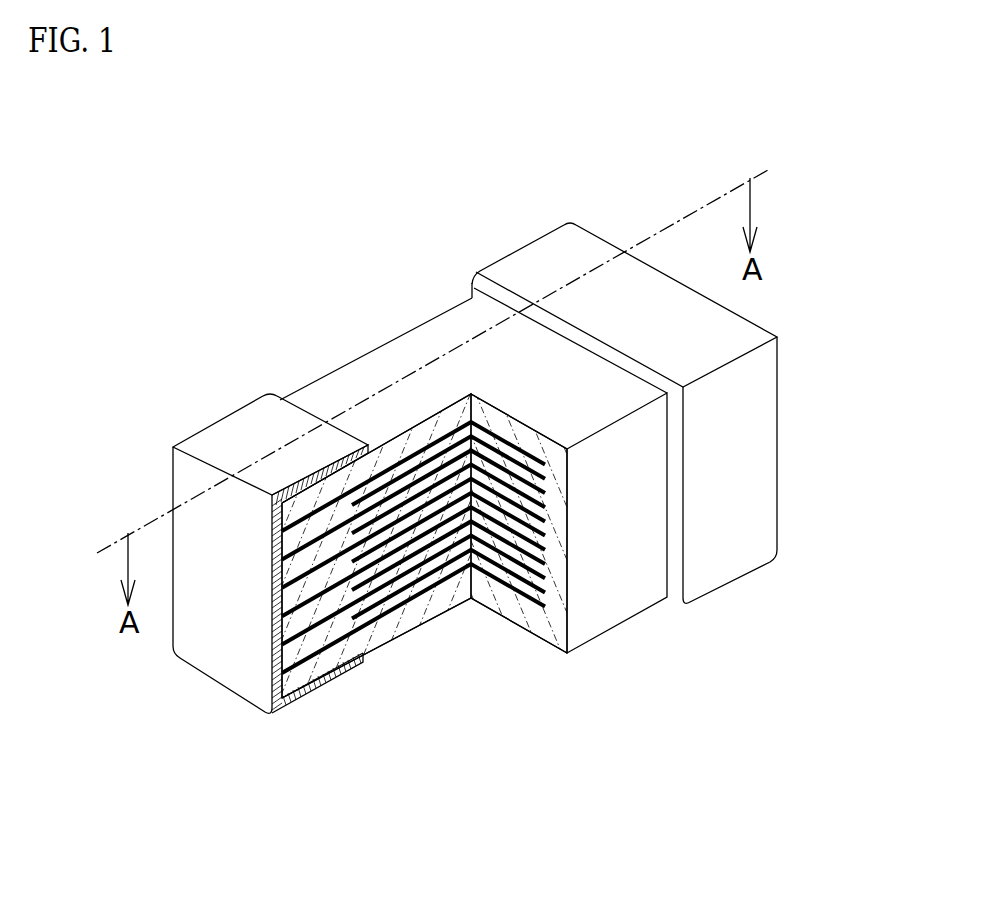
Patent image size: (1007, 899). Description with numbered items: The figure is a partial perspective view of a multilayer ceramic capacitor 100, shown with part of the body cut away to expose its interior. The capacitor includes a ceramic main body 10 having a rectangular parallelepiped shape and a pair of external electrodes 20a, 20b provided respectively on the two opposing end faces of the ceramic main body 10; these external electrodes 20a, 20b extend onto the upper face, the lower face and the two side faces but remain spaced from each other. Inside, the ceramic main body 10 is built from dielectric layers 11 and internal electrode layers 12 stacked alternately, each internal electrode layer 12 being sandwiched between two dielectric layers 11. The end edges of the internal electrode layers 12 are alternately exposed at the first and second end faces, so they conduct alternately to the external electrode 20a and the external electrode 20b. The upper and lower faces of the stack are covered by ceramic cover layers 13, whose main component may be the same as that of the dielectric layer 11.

The multilayer ceramic capacitor 100 is at (520, 446).
The ceramic main body 10 is at (330, 368).
The dielectric layer 11 is at (393, 603).
The internal electrode layer 12 is at (429, 581).
The cover layer 13 is at (443, 335).
The external electrode 20a is at (232, 410).
The external electrode 20b is at (528, 265).